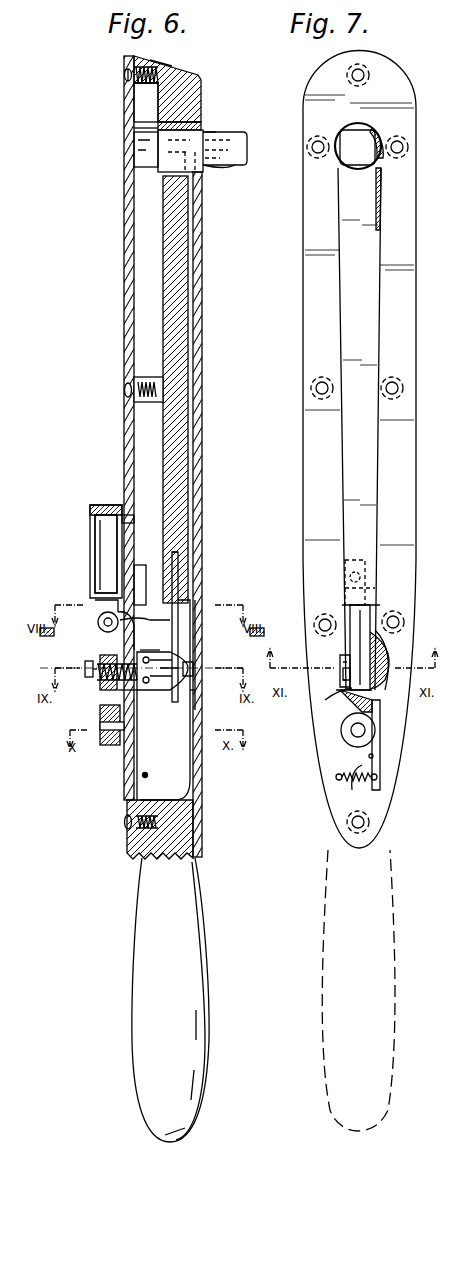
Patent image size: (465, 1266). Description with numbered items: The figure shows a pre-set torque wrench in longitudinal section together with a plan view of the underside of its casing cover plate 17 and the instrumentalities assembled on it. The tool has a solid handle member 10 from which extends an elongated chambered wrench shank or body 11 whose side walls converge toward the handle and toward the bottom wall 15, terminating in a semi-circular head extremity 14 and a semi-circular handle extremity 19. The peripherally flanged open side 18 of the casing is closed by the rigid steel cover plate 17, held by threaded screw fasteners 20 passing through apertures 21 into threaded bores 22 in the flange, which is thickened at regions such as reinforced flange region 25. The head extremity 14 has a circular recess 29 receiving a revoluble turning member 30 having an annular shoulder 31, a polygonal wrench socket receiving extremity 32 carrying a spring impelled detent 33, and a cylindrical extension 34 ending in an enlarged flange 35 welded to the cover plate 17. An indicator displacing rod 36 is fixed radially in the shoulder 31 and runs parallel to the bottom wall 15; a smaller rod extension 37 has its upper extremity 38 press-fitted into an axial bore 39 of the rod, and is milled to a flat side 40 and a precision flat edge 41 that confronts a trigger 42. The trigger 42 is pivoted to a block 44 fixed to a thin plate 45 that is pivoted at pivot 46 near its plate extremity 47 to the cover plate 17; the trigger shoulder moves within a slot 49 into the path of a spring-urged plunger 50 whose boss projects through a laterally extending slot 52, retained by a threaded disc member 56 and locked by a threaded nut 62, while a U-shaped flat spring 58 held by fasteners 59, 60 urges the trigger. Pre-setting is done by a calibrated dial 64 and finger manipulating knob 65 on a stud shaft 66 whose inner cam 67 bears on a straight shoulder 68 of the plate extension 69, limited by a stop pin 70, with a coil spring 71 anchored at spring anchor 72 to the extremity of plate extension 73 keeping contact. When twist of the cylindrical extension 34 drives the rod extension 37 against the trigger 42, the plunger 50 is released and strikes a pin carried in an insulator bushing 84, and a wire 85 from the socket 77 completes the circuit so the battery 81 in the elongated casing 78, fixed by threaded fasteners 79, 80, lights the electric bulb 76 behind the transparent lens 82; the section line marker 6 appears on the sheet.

In FIG. 6, the section line 6 is at (76, 795).
In FIG. 6, the handle member 10 is at (182, 945).
In FIG. 7, the handle member 10 is at (382, 915).
In FIG. 6, the wrench shank or body 11 is at (210, 254).
In FIG. 6, the head extremity 14 is at (184, 72).
In FIG. 6, the bottom wall 15 is at (202, 378).
In FIG. 6, the cover plate 17 is at (117, 314).
In FIG. 7, the cover plate 17 is at (420, 340).
In FIG. 6, the peripherally flanged open side 18 is at (152, 62).
In FIG. 6, the handle extremity 19 is at (196, 808).
In FIG. 6, the threaded screw fasteners 20 is at (124, 76).
In FIG. 7, the apertures 21 is at (365, 71).
In FIG. 6, the threaded bores 22 is at (145, 105).
In FIG. 6, the reinforced flange region 25 is at (140, 378).
In FIG. 6, the circular recess 29 is at (198, 124).
In FIG. 6, the revoluble turning member 30 is at (200, 128).
In FIG. 6, the annular shoulder 31 is at (216, 132).
In FIG. 7, the annular shoulder 31 is at (346, 138).
In FIG. 6, the polygonal wrench socket receiving extremity 32 is at (232, 146).
In FIG. 7, the polygonal wrench socket receiving extremity 32 is at (374, 138).
In FIG. 6, the spring impelled detent 33 is at (237, 167).
In FIG. 7, the spring impelled detent 33 is at (358, 168).
In FIG. 6, the cylindrical extension 34 is at (150, 128).
In FIG. 6, the enlarged flange 35 is at (134, 158).
In FIG. 6, the indicator displacing rod 36 is at (172, 282).
In FIG. 7, the indicator displacing rod 36 is at (362, 290).
In FIG. 6, the rod extension 37 is at (186, 603).
In FIG. 7, the rod extension 37 is at (352, 642).
In FIG. 6, the upper extremity of rod extension 38 is at (178, 572).
In FIG. 7, the upper extremity of rod extension 38 is at (345, 588).
In FIG. 6, the axial bore 39 is at (180, 556).
In FIG. 6, the flat side 40 is at (165, 652).
In FIG. 6, the flat edge 41 is at (196, 700).
In FIG. 6, the trigger 42 is at (196, 680).
In FIG. 6, the block 44 is at (160, 692).
In FIG. 7, the block 44 is at (352, 700).
In FIG. 6, the plate 45 is at (134, 604).
In FIG. 7, the plate 45 is at (345, 612).
In FIG. 6, the pivot 46 is at (140, 578).
In FIG. 7, the pivot 46 is at (345, 572).
In FIG. 7, the plate extremity 47 is at (345, 562).
In FIG. 7, the slot 49 is at (342, 698).
In FIG. 6, the plunger 50 is at (100, 668).
In FIG. 6, the laterally extending slot 52 is at (150, 700).
In FIG. 6, the threaded disc member 56 is at (88, 672).
In FIG. 6, the flat spring 58 is at (194, 665).
In FIG. 7, the flat spring 58 is at (342, 668).
In FIG. 6, the fastener 59 is at (122, 690).
In FIG. 7, the fastener 59 is at (345, 685).
In FIG. 6, the fastener 60 is at (104, 658).
In FIG. 7, the fastener 60 is at (343, 660).
In FIG. 6, the threaded nut 62 is at (85, 676).
In FIG. 6, the calibrated dial 64 is at (105, 752).
In FIG. 6, the finger manipulating knob 65 is at (106, 742).
In FIG. 6, the stud shaft 66 is at (100, 730).
In FIG. 7, the stud shaft 66 is at (350, 732).
In FIG. 6, the cam 67 is at (148, 745).
In FIG. 7, the cam 67 is at (345, 745).
In FIG. 7, the straight shoulder 68 is at (373, 756).
In FIG. 7, the plate extension 69 is at (381, 738).
In FIG. 7, the stop pin 70 is at (374, 714).
In FIG. 6, the coil spring 71 is at (150, 775).
In FIG. 7, the coil spring 71 is at (355, 792).
In FIG. 7, the spring anchor 72 is at (378, 777).
In FIG. 6, the extremity of plate extension 73 is at (135, 795).
In FIG. 7, the extremity of plate extension 73 is at (376, 790).
In FIG. 6, the electric bulb 76 is at (100, 630).
In FIG. 6, the socket 77 is at (96, 601).
In FIG. 6, the elongated casing 78 is at (90, 560).
In FIG. 6, the threaded fastener 79 is at (130, 518).
In FIG. 6, the threaded fastener 80 is at (116, 604).
In FIG. 6, the battery 81 is at (100, 537).
In FIG. 6, the transparent lens 82 is at (96, 640).
In FIG. 7, the insulator bushing 84 is at (457, 185).
In FIG. 6, the wire 85 is at (150, 622).
In FIG. 7, the wire 85 is at (390, 650).